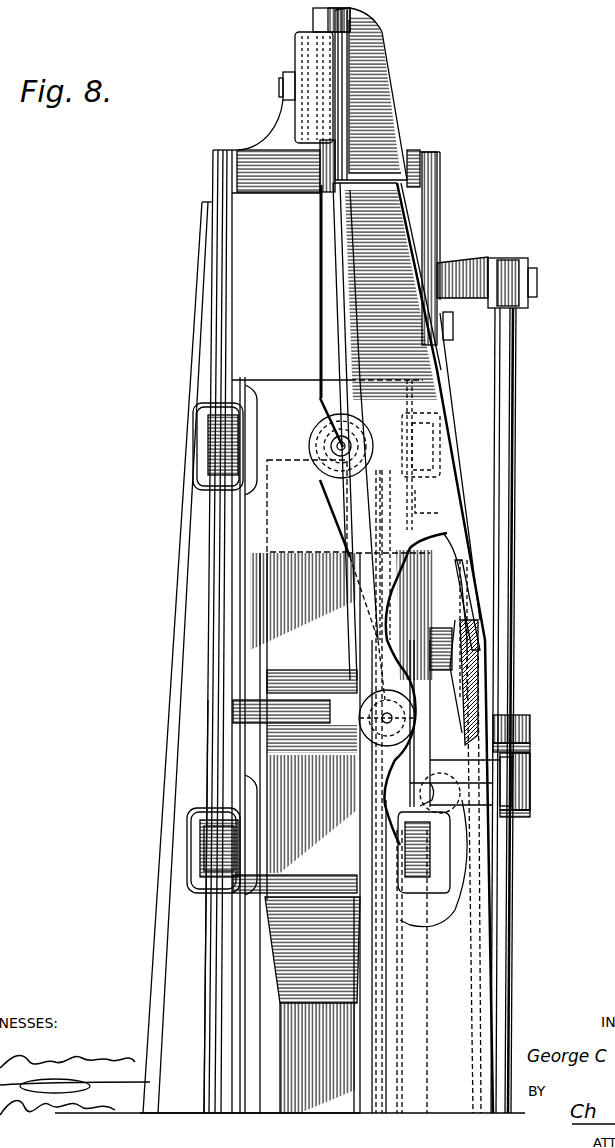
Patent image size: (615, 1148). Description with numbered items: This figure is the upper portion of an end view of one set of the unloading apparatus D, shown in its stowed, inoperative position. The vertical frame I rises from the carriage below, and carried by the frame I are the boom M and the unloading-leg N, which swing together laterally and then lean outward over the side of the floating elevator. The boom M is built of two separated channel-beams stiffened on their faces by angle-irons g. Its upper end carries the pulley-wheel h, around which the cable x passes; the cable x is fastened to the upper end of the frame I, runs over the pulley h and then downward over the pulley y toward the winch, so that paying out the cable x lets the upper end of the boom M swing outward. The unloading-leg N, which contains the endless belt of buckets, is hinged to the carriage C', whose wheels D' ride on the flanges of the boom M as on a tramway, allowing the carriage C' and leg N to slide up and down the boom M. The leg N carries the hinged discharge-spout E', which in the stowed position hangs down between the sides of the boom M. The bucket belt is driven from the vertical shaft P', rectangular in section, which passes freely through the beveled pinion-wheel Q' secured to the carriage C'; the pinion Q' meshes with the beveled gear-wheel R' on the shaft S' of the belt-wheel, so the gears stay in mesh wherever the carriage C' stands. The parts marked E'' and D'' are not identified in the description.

The pulley-wheel h is at (296, 46).
The cable x is at (343, 540).
The unloading apparatus D is at (187, 631).
The wheels D' is at (286, 648).
The carriage C' is at (265, 745).
The pulley y is at (312, 446).
The angle-irons g is at (190, 882).
The upper drum E'' is at (281, 726).
The discharge-spout E' is at (298, 1005).
The unloading-leg N is at (263, 1103).
The boom M is at (212, 979).
The vertical frame I is at (425, 752).
The lower bearing D'' is at (435, 852).
The shaft S' is at (454, 674).
The beveled gear-wheel R' is at (473, 628).
The vertical shaft P' is at (498, 685).
The beveled pinion-wheel Q' is at (530, 758).